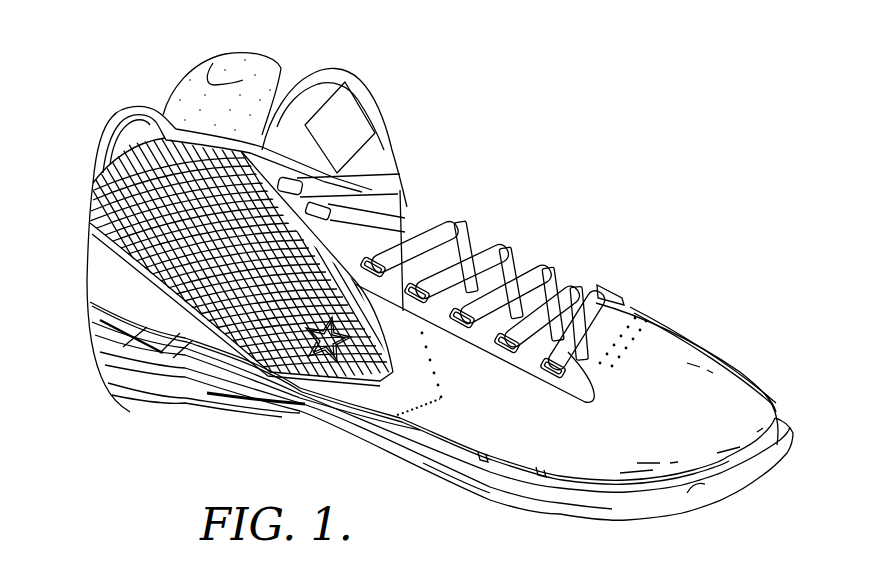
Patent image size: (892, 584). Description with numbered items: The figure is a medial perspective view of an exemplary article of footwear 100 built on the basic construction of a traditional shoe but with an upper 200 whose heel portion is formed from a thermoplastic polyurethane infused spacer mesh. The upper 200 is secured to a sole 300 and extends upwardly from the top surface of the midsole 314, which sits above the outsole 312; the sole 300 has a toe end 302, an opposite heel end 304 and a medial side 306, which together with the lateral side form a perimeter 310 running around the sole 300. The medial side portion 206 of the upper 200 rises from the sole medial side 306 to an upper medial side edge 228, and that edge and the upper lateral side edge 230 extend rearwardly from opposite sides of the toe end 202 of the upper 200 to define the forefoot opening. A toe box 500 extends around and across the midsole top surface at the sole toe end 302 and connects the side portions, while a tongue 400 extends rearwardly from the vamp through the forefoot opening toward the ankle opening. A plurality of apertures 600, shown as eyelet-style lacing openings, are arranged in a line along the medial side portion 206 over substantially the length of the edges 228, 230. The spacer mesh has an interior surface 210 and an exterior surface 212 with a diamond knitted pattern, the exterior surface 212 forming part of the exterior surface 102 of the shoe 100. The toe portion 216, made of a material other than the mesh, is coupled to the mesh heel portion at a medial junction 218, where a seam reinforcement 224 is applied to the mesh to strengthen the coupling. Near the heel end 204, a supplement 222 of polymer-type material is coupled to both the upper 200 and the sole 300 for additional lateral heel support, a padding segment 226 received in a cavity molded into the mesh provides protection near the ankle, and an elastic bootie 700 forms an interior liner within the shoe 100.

The article of footwear 100 is at (617, 143).
The exterior surface 102 is at (146, 391).
The upper 200 is at (519, 412).
The toe end 202 is at (774, 413).
The heel end 204 is at (86, 292).
The medial side portion 206 is at (272, 378).
The interior surface 210 is at (222, 87).
The exterior surface 212 is at (233, 303).
The toe portion 216 is at (86, 177).
The medial junction 218 is at (405, 387).
The supplement 222 is at (120, 375).
The seam reinforcement 224 is at (366, 393).
The padding segment 226 is at (90, 201).
The upper medial side edge 228 is at (464, 281).
The upper lateral side edge 230 is at (539, 266).
The sole 300 is at (567, 510).
The toe end 302 is at (792, 455).
The heel end 304 is at (86, 329).
The medial side 306 is at (225, 410).
The perimeter 310 is at (320, 395).
The outsole 312 is at (505, 508).
The midsole 314 is at (487, 488).
The tongue 400 is at (345, 107).
The toe box 500 is at (731, 371).
The apertures 600 is at (381, 253).
The bootie 700 is at (135, 102).